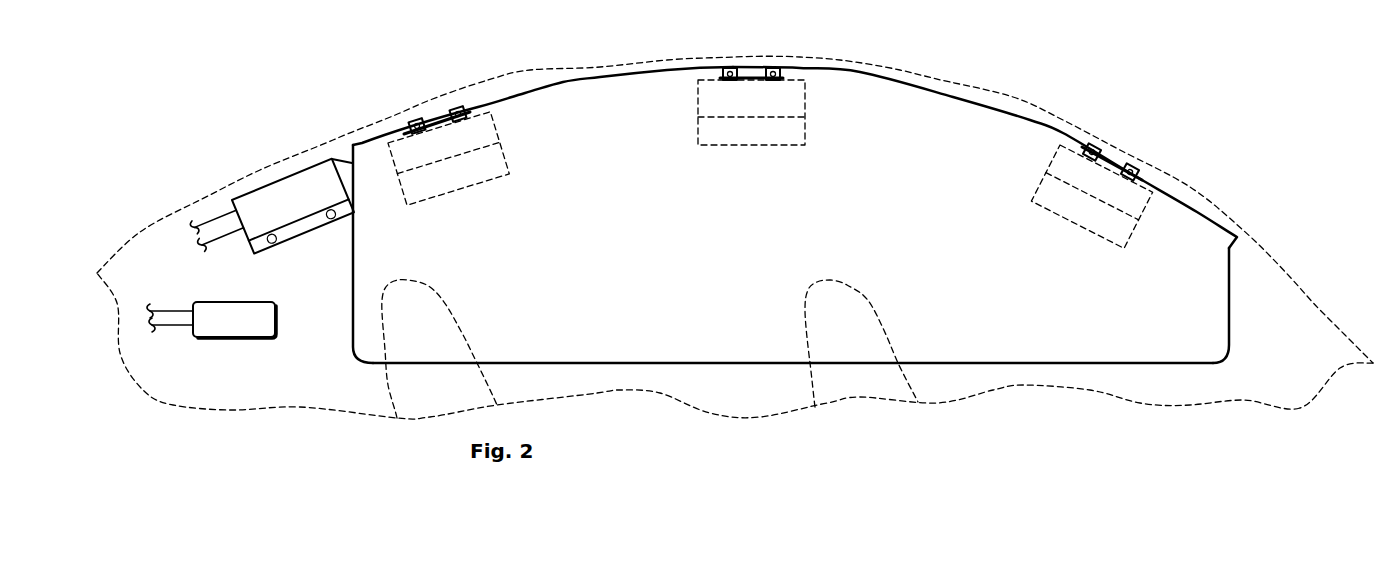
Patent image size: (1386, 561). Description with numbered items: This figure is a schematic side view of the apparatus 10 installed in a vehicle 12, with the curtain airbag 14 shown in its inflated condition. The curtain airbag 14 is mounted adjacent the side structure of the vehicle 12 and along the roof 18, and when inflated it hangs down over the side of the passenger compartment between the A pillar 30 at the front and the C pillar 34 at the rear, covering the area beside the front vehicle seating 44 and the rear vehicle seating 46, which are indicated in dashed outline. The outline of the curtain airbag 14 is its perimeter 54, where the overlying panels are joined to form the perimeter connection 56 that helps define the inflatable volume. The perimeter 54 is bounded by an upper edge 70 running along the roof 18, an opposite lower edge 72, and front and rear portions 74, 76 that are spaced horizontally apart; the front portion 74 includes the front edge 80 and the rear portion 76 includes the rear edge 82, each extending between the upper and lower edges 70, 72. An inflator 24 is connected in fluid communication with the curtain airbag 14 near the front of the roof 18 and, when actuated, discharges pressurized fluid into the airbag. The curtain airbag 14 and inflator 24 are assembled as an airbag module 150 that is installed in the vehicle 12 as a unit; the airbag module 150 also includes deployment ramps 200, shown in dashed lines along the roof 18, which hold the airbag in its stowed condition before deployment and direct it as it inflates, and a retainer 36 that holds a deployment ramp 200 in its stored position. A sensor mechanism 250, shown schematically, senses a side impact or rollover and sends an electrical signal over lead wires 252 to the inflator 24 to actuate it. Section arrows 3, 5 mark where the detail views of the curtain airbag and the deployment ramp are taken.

The section line 3- 3 is at (729, 55).
The section line 5- 5 is at (729, 40).
The apparatus 10 is at (784, 224).
The vehicle 12 is at (1125, 68).
The curtain airbag 14 is at (993, 308).
The roof 18 is at (1013, 97).
The inflator 24 is at (280, 200).
The A pillar 30 is at (1300, 312).
The C pillar 34 is at (337, 310).
The retainer 36 is at (562, 97).
The front vehicle seating 44 is at (873, 310).
The rear vehicle seating 46 is at (452, 308).
The perimeter 54 is at (1128, 363).
The perimeter connection 56 is at (767, 363).
The upper edge 70 is at (870, 78).
The lower edge 72 is at (627, 363).
The front portion 74 is at (1203, 315).
The rear portion 76 is at (383, 280).
The front edge 80 is at (1230, 318).
The rear edge 82 is at (353, 272).
The airbag module 150 is at (488, 80).
The deployment ramp 200 is at (450, 155).
The sensor mechanism 250 is at (237, 337).
The lead wires 252 is at (218, 213).